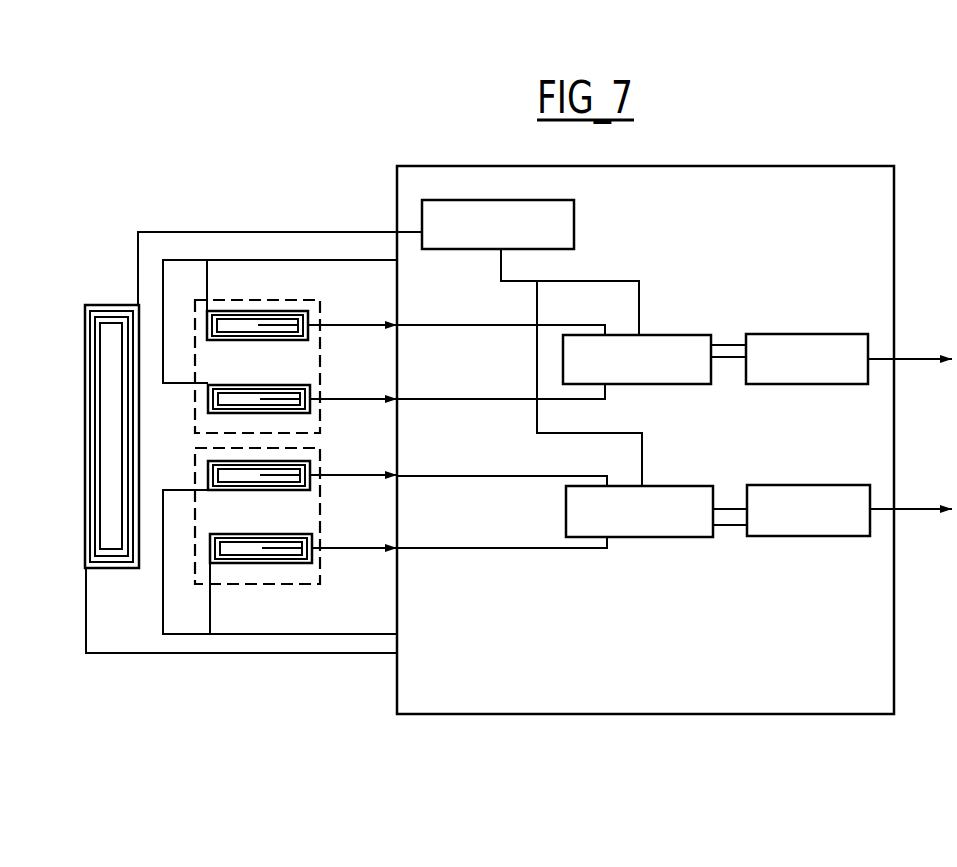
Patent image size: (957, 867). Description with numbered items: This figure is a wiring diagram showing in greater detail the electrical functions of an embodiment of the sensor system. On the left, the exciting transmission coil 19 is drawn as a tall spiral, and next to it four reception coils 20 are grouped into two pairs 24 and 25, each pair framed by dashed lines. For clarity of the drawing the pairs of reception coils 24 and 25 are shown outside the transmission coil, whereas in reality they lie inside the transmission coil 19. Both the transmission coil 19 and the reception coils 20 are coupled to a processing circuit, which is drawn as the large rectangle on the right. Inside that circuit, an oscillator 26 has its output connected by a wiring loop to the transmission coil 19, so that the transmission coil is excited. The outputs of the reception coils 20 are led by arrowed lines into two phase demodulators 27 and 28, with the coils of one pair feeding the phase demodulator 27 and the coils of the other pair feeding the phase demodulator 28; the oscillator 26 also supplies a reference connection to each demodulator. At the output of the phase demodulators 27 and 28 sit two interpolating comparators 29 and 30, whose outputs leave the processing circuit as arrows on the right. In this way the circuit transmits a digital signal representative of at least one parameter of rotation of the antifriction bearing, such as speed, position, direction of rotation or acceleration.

The transmission coil 19 is at (100, 527).
The reception coils 20 is at (215, 327).
The first pair of reception coils 24 is at (322, 372).
The second pair of reception coils 25 is at (322, 522).
The oscillator 26 is at (576, 229).
The phase demodulator 27 is at (682, 335).
The phase demodulator 28 is at (677, 486).
The interpolating comparator 29 is at (805, 334).
The interpolating comparator 30 is at (808, 485).